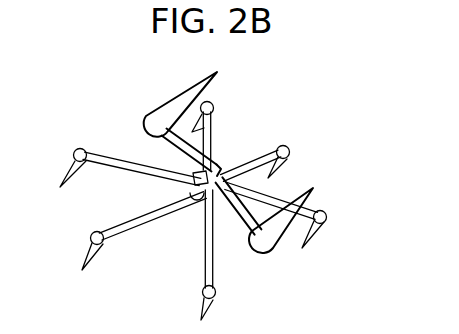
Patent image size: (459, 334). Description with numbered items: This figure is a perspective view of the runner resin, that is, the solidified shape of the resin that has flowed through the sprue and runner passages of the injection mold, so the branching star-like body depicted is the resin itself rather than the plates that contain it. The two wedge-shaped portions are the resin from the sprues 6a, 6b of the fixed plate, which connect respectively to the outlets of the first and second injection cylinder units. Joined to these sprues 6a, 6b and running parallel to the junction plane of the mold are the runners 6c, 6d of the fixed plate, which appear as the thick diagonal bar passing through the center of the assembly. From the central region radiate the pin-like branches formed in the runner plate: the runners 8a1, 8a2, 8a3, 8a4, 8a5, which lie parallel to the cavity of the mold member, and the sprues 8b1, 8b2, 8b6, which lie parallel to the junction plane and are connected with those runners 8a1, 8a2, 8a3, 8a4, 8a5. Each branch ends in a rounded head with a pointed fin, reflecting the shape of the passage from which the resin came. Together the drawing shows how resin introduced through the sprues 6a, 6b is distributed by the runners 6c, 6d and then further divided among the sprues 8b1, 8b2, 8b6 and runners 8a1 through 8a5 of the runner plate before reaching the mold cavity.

The sprue 6a is at (188, 98).
The sprue 6b is at (287, 226).
The runner 6c is at (172, 152).
The runner 6d is at (240, 233).
The runner 8a1 is at (67, 185).
The runner 8a2 is at (91, 258).
The runner 8a3 is at (212, 307).
The runner 8a4 is at (277, 199).
The runner 8a5 is at (288, 166).
The sprue 8b1 is at (113, 170).
The sprue 8b2 is at (160, 223).
The sprue 8b6 is at (212, 125).